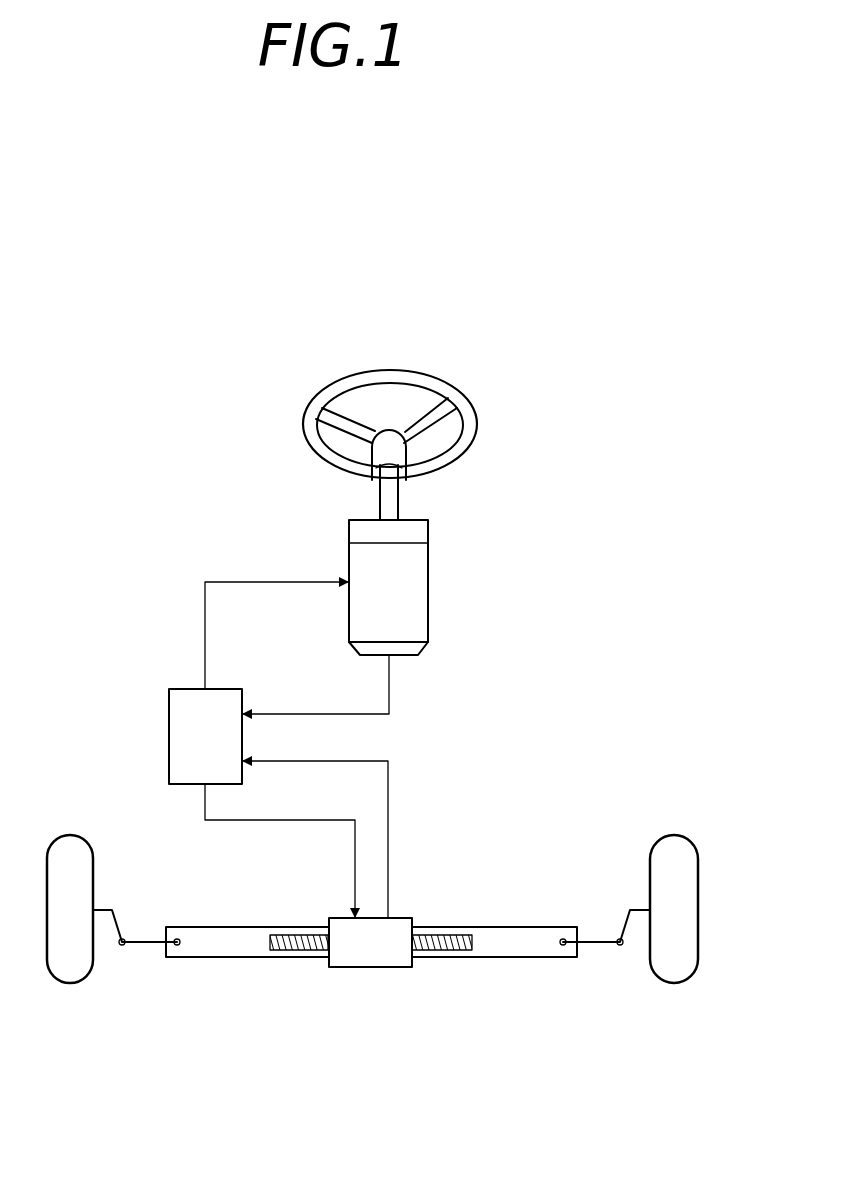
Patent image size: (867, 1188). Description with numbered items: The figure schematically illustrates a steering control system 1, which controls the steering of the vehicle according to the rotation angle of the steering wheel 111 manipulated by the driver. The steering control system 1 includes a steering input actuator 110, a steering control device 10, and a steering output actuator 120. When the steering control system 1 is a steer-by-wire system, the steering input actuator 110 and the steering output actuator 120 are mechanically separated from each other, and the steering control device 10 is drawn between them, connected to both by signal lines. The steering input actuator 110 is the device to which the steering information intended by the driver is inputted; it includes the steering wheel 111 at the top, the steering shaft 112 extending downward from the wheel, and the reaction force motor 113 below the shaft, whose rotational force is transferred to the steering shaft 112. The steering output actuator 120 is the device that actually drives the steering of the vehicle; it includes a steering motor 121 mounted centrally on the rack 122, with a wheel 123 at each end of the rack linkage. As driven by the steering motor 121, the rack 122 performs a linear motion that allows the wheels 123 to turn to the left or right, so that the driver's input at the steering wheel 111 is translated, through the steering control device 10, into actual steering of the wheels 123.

The steering control system 1 is at (104, 308).
The steering control device 10 is at (169, 735).
The steering input actuator 110 is at (424, 494).
The steering wheel 111 is at (390, 374).
The steering shaft 112 is at (428, 578).
The reaction force motor 113 is at (402, 656).
The steering output actuator 120 is at (371, 984).
The steering motor 121 is at (370, 968).
The rack 122 is at (245, 960).
The wheel 123 is at (67, 984).